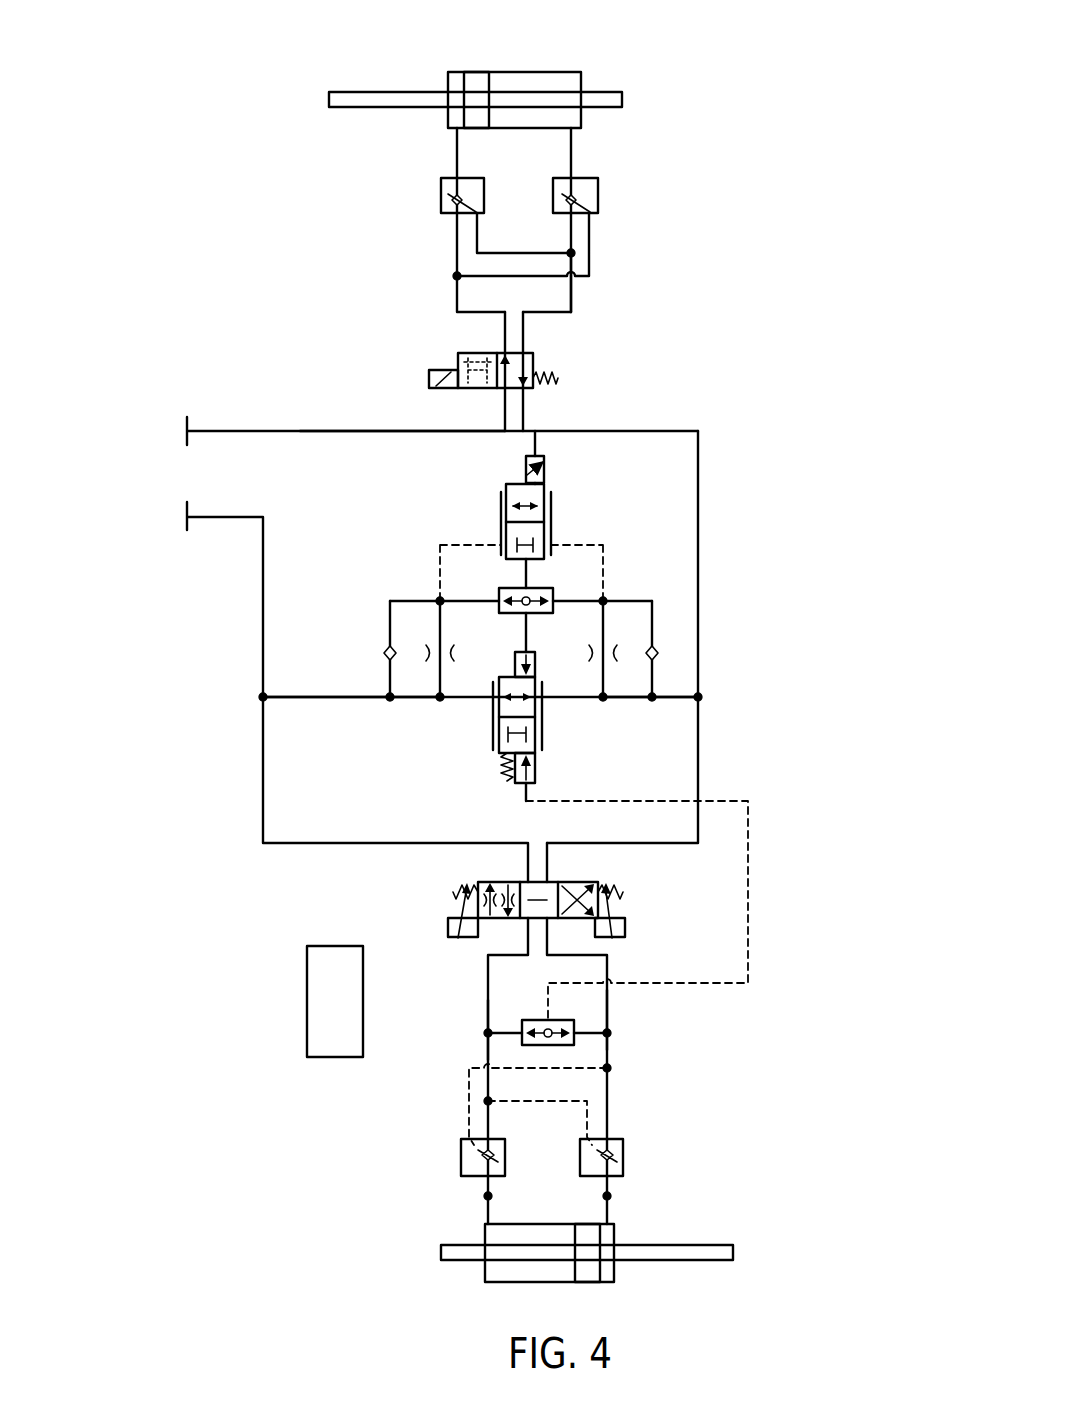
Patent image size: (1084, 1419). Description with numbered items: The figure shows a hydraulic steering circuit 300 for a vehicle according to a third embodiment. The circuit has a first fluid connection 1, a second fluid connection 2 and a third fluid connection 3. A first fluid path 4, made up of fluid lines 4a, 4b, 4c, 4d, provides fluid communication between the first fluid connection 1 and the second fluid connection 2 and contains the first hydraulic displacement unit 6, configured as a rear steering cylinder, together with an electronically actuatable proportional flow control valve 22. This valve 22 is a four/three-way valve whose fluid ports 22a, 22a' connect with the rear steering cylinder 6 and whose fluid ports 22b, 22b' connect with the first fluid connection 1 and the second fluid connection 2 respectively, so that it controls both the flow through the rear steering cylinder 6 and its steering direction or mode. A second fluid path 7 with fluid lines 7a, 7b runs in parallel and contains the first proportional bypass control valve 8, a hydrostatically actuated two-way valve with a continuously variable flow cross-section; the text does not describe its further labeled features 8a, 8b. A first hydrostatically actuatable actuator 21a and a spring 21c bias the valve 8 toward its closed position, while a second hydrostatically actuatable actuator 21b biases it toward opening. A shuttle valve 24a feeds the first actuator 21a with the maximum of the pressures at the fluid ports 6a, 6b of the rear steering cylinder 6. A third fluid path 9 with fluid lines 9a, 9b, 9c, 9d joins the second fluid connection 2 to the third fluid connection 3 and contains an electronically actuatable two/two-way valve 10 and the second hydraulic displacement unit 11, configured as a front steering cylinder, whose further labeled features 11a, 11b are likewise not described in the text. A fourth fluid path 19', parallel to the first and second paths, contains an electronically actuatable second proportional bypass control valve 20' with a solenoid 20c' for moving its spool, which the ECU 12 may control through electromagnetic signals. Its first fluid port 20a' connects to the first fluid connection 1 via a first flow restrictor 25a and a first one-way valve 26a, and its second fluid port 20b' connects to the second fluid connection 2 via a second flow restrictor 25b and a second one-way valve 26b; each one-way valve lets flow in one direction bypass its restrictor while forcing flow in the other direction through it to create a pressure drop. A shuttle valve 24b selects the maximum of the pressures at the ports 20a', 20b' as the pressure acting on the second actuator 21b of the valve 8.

The first fluid connection 1 is at (186, 514).
The second fluid connection 2 is at (699, 696).
The third fluid connection 3 is at (186, 428).
The first fluid path 4 is at (770, 1087).
The fluid line 4a is at (290, 843).
The fluid line 4b is at (698, 753).
The fluid line 4c is at (488, 1018).
The fluid line 4d is at (607, 1008).
The first hydraulic displacement unit 6 is at (678, 1292).
The fluid port 6a is at (486, 1223).
The fluid port 6b is at (609, 1223).
The second fluid path 7 is at (438, 745).
The fluid line 7a is at (325, 700).
The fluid line 7b is at (623, 700).
The first proportional bypass control valve 8 is at (553, 721).
The valve port 8a is at (493, 700).
The valve port 8b is at (542, 696).
The third fluid path 9 is at (706, 318).
The fluid line 9a is at (698, 478).
The fluid line 9b is at (368, 430).
The fluid line 9c is at (571, 293).
The fluid line 9d is at (457, 293).
The electronically actuatable 2/2-way valve 10 is at (584, 365).
The second hydraulic displacement unit 11 is at (590, 65).
The check valve 11a is at (576, 128).
The check valve 11b is at (452, 128).
The ECU 12 is at (334, 1057).
The fourth fluid path 19' is at (476, 566).
The second proportional bypass control valve 20' is at (557, 511).
The first fluid port 20a' is at (466, 546).
The second fluid port 20b' is at (588, 544).
The solenoid 20c' is at (509, 457).
The first hydrostatically actuatable actuator 21a is at (517, 784).
The second hydrostatically actuatable actuator 21b is at (516, 660).
The spring 21c is at (500, 775).
The electronically actuatable proportional flow control valve 22 is at (648, 898).
The fluid port 22a is at (473, 1053).
The fluid port 22a' is at (605, 1053).
The fluid port 22b is at (487, 862).
The fluid port 22b' is at (605, 862).
The shuttle valve 24a is at (566, 1054).
The shuttle valve 24b is at (542, 582).
The first flow restrictor 25a is at (424, 628).
The second flow restrictor 25b is at (620, 628).
The first one-way valve 26a is at (374, 652).
The second one-way valve 26b is at (672, 643).
The hydraulic steering circuit 300 is at (768, 178).